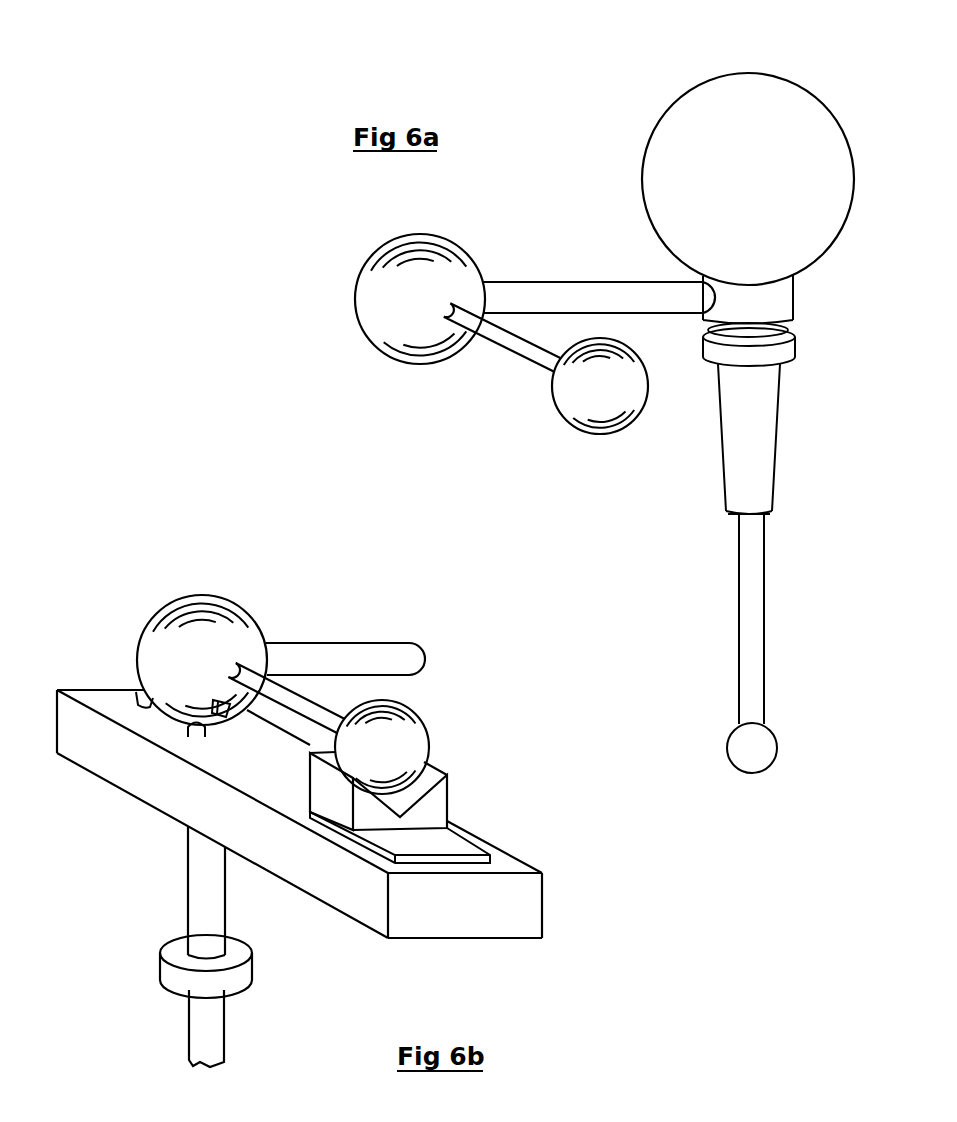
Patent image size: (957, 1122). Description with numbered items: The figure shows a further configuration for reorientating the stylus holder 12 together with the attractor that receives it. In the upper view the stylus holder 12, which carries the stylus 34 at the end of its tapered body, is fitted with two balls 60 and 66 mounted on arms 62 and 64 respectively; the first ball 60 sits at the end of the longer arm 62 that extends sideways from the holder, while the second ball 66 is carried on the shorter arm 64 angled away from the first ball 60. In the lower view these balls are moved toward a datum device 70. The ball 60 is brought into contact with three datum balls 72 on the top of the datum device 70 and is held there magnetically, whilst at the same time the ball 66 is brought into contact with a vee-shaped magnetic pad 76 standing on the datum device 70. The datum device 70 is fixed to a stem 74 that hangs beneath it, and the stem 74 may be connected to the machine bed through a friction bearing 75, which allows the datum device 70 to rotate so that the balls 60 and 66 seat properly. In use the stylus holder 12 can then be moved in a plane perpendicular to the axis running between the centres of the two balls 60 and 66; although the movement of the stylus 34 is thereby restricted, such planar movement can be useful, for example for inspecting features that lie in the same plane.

In FIG. 6A, the stylus holder 12 is at (816, 417).
In FIG. 6A, the stylus 34 is at (729, 748).
In FIG. 6A, the ball 60 is at (372, 304).
In FIG. 6B, the ball 60 is at (250, 628).
In FIG. 6A, the arm 62 is at (553, 298).
In FIG. 6B, the arm 62 is at (340, 655).
In FIG. 6A, the arm 64 is at (507, 340).
In FIG. 6B, the arm 64 is at (285, 698).
In FIG. 6A, the ball 66 is at (570, 393).
In FIG. 6B, the ball 66 is at (410, 723).
In FIG. 6B, the datum device 70 is at (542, 907).
In FIG. 6B, the datum balls 72 is at (138, 688).
In FIG. 6B, the stem 74 is at (200, 870).
In FIG. 6B, the friction bearing 75 is at (168, 970).
In FIG. 6B, the vee-shaped magnetic pad 76 is at (437, 815).